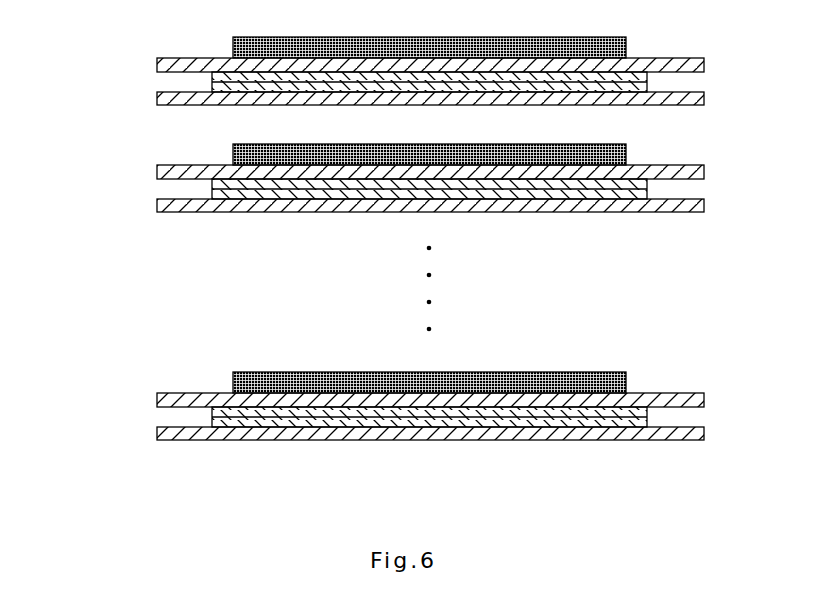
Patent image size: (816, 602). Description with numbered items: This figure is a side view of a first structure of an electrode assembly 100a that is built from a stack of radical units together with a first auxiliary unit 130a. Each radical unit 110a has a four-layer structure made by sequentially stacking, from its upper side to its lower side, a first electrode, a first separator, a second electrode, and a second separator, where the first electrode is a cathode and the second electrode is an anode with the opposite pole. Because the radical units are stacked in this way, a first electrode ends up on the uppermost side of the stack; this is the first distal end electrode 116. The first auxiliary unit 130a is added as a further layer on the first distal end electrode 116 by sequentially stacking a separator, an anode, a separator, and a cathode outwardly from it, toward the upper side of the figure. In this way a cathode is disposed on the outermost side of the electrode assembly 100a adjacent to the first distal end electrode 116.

The electrode assembly 100a is at (710, 48).
The first auxiliary unit 130a is at (83, 33).
The radical unit 110a is at (83, 368).
The first distal end electrode 116 is at (234, 153).